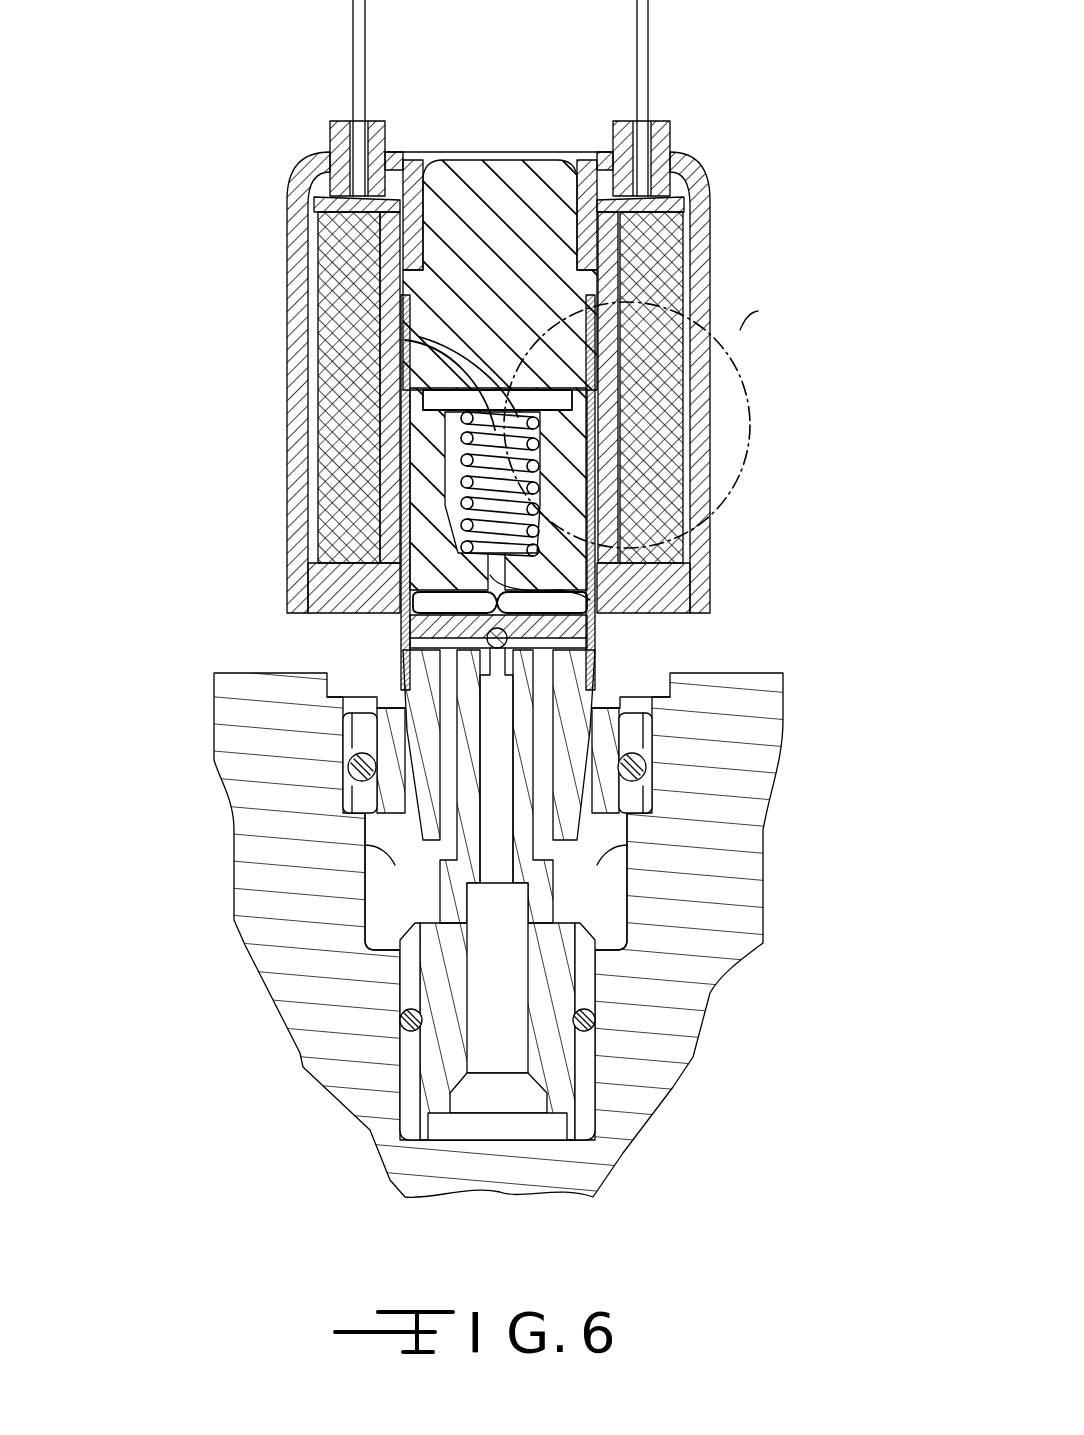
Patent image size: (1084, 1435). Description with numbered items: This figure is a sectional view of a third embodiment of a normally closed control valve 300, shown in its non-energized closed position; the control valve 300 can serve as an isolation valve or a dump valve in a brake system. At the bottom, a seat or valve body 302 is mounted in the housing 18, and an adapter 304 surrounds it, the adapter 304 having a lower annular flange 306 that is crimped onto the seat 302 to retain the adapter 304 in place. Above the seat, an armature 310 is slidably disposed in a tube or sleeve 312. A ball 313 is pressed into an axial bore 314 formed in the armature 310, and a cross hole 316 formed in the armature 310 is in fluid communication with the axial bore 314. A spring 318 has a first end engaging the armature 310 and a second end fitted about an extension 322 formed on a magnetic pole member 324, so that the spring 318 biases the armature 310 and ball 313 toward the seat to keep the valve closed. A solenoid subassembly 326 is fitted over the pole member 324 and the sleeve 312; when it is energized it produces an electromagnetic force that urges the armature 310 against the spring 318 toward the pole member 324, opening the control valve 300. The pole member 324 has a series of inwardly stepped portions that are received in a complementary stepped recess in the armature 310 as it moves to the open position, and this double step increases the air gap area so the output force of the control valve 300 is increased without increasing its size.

The control valve 300 is at (146, 163).
The magnetic pole member 324 is at (485, 185).
The solenoid subassembly 326 is at (715, 218).
The extension 322 is at (497, 435).
The spring 318 is at (457, 482).
The armature 310 is at (435, 540).
The axial bore 314 is at (603, 600).
The cross hole 316 is at (578, 596).
The sleeve 312 is at (400, 660).
The ball 313 is at (595, 672).
The adapter 304 is at (355, 730).
The lower annular flange 306 is at (390, 820).
The valve body 302 is at (590, 973).
The housing 18 is at (637, 1123).